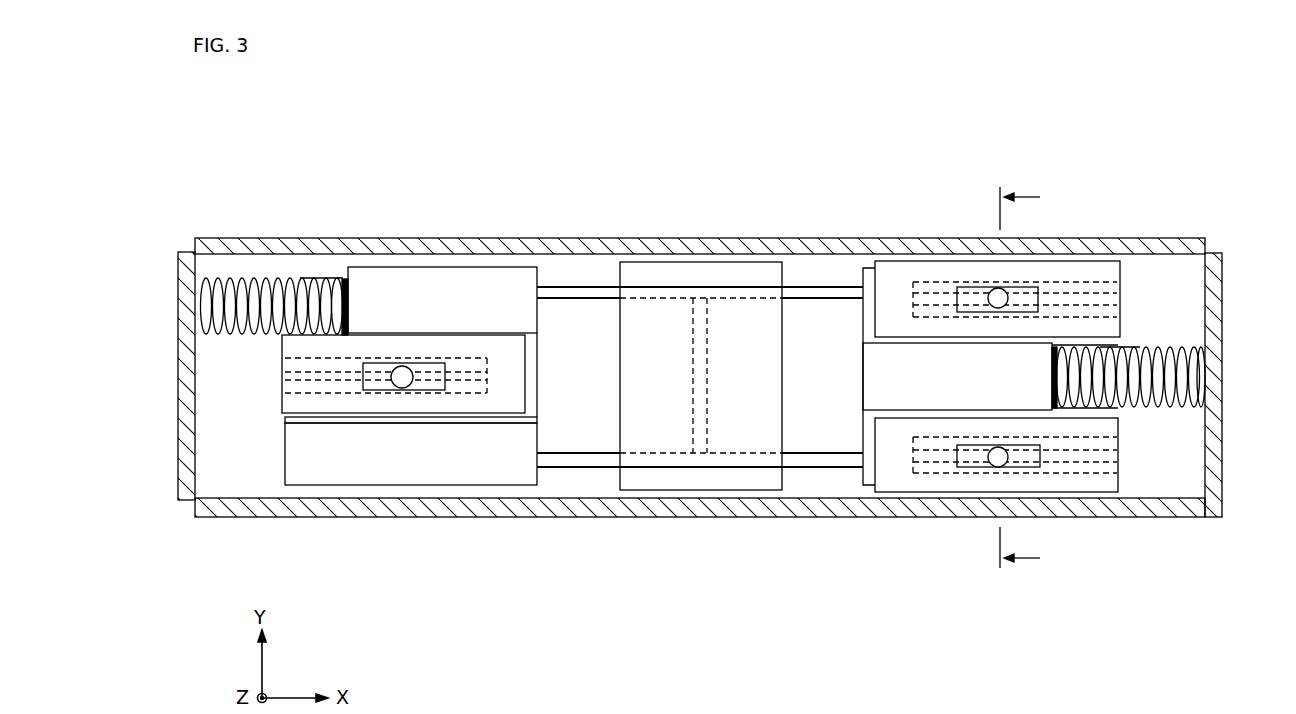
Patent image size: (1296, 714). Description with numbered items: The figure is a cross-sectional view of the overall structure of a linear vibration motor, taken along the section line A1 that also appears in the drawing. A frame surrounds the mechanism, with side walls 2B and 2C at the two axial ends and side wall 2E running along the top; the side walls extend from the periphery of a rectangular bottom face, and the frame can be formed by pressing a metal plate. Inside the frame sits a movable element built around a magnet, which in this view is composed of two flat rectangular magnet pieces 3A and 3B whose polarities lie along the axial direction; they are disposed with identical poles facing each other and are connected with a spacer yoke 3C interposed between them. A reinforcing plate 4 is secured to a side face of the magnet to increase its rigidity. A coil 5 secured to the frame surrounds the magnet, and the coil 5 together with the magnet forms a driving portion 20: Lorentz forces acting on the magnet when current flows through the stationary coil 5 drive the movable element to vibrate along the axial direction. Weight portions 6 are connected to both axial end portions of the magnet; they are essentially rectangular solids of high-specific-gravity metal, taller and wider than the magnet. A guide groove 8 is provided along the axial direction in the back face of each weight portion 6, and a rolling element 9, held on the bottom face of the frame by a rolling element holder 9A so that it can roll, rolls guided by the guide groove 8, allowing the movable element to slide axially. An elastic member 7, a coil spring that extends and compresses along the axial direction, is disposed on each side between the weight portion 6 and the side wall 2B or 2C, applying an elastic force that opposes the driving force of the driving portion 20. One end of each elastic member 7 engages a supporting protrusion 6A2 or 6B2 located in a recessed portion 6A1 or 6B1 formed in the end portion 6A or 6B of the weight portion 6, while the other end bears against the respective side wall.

The side wall 2B is at (181, 405).
The side wall 2C is at (1222, 387).
The side wall 2E is at (815, 238).
The driving portion 20 is at (750, 517).
The elastic member 7 is at (238, 276).
The recessed portion 6A1 is at (344, 278).
The supporting protrusion 6A2 is at (310, 276).
The recessed portion 6B1 is at (1103, 418).
The supporting protrusion 6B2 is at (1135, 353).
The end portion 6A is at (280, 465).
The end portion 6B is at (1120, 493).
The weight portion 6 is at (403, 487).
The magnet piece 3A is at (553, 442).
The magnet piece 3B is at (798, 442).
The spacer yoke 3C is at (694, 430).
The coil 5 is at (712, 262).
The reinforcing plate 4 is at (586, 286).
The rolling element 9 is at (403, 366).
The rolling element holder 9A is at (921, 261).
The guide groove 8 is at (470, 357).
The section line A1 is at (1036, 379).